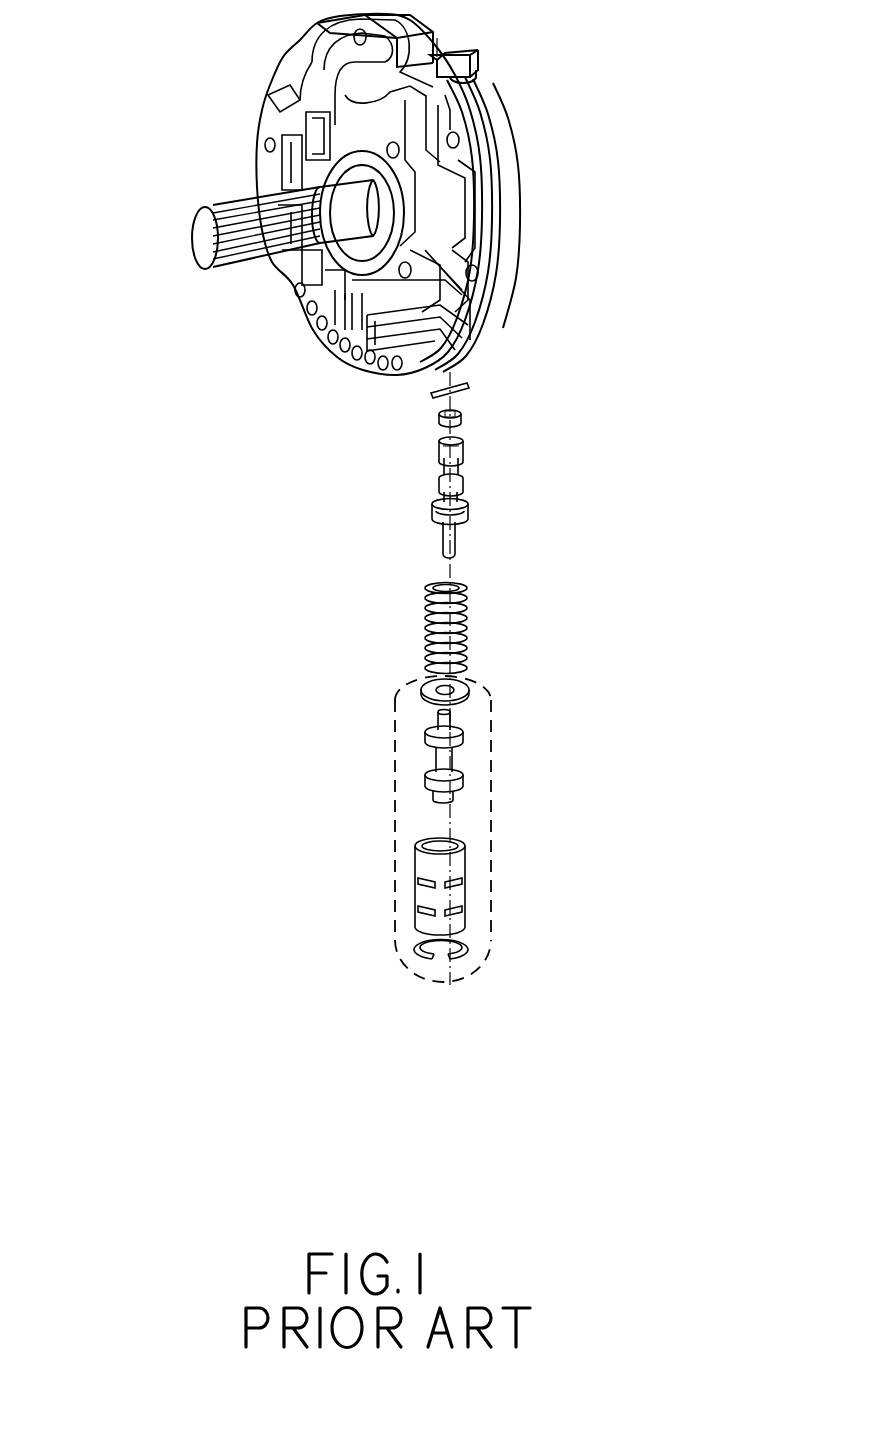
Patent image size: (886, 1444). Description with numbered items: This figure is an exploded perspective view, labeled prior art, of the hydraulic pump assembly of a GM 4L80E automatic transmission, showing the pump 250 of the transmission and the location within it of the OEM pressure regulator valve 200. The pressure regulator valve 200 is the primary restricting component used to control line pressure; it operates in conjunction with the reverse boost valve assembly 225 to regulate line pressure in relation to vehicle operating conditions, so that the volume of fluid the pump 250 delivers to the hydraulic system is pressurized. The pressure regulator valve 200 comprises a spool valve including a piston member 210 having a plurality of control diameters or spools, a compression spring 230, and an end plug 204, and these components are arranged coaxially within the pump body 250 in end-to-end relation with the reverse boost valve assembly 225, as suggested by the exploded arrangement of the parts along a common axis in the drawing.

The pump 250 is at (549, 121).
The pressure regulator valve 200 is at (509, 497).
The end plug 204 is at (463, 418).
The piston member 210 is at (446, 462).
The compression spring 230 is at (470, 589).
The reverse boost valve assembly 225 is at (539, 763).